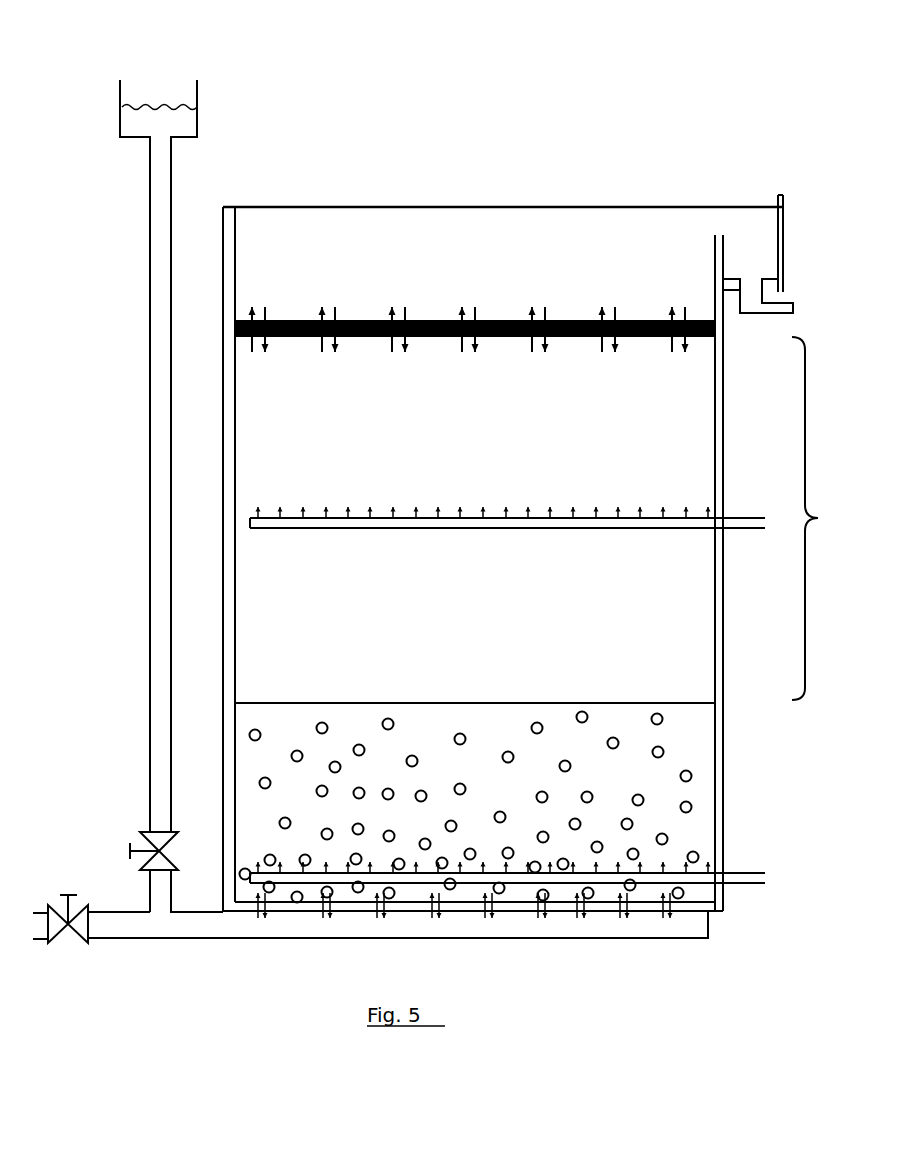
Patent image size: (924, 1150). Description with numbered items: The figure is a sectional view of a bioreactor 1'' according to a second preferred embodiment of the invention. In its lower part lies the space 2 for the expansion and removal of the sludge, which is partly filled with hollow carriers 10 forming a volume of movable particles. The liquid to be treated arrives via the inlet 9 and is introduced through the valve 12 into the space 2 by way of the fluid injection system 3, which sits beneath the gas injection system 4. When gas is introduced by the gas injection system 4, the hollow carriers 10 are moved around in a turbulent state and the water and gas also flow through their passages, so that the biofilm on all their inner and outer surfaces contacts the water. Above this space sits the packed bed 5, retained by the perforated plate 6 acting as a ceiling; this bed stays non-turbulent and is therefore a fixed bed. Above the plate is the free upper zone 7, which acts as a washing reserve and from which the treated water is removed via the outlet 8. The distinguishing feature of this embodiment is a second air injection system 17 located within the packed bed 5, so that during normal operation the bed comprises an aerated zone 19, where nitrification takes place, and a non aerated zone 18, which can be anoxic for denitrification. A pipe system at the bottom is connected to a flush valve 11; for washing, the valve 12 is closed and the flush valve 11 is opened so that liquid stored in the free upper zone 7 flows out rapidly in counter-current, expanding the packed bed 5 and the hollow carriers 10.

The bioreactor 1'' is at (503, 114).
The space for the expansion and removal of the sludge 2 is at (705, 805).
The fluid injection system 3 is at (708, 920).
The gas injection system 4 is at (765, 875).
The packed bed 5 is at (817, 518).
The perforated plate 6 is at (715, 327).
The free upper zone 7 is at (551, 244).
The outlet 8 is at (795, 312).
The inlet 9 is at (160, 90).
The hollow carriers 10 is at (692, 777).
The flush valve 11 is at (55, 945).
The valve 12 is at (140, 840).
The second air injection system 17 is at (765, 515).
The non aerated zone 18 is at (705, 634).
The aerated zone 19 is at (705, 443).